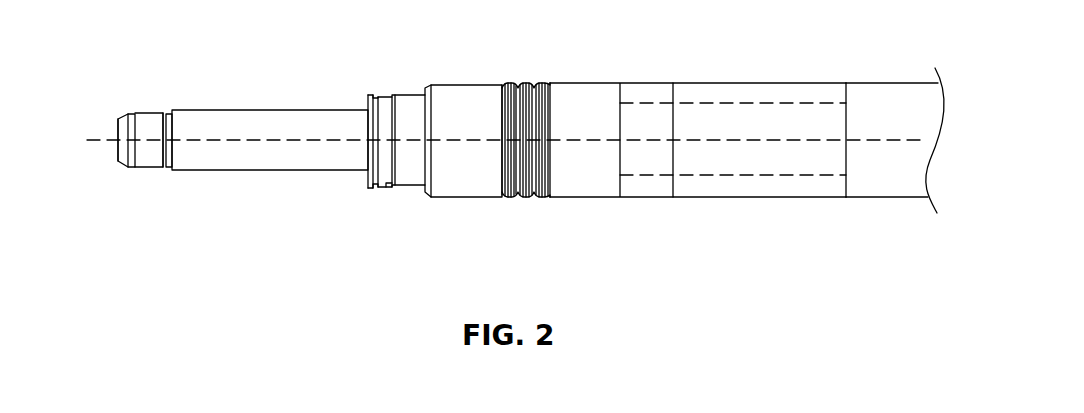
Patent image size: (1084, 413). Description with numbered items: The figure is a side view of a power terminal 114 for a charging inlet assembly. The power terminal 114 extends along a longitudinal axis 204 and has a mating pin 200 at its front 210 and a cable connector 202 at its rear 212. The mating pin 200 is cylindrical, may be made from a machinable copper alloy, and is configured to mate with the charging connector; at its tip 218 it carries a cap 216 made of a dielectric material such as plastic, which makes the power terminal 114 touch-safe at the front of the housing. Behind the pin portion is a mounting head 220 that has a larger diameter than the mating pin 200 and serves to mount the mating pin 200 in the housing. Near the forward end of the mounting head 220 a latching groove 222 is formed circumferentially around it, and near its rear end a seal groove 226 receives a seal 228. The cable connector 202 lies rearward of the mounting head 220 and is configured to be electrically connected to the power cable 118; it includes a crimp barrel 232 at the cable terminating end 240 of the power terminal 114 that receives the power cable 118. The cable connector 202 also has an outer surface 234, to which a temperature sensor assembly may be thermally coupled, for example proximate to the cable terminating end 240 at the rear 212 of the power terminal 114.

The power terminal 114 is at (337, 74).
The power cable 118 is at (898, 172).
The mating pin 200 is at (328, 163).
The cable connector 202 is at (598, 188).
The longitudinal axis 204 is at (202, 142).
The front 210 is at (118, 146).
The rear 212 is at (847, 155).
The cap 216 is at (143, 122).
The tip 218 is at (118, 133).
The mounting head 220 is at (453, 93).
The latching groove 222 is at (387, 96).
The seal groove 226 is at (500, 198).
The seal 228 is at (522, 198).
The crimp barrel 232 is at (786, 83).
The outer surface 234 is at (708, 82).
The cable terminating end 240 is at (848, 83).